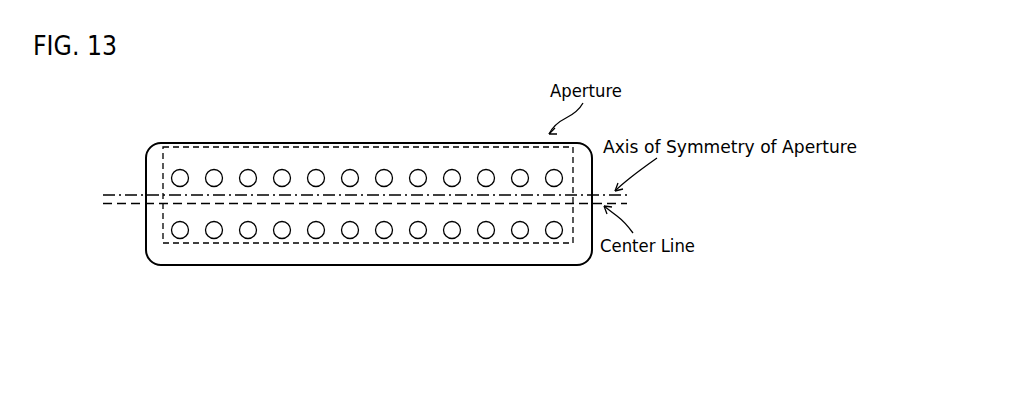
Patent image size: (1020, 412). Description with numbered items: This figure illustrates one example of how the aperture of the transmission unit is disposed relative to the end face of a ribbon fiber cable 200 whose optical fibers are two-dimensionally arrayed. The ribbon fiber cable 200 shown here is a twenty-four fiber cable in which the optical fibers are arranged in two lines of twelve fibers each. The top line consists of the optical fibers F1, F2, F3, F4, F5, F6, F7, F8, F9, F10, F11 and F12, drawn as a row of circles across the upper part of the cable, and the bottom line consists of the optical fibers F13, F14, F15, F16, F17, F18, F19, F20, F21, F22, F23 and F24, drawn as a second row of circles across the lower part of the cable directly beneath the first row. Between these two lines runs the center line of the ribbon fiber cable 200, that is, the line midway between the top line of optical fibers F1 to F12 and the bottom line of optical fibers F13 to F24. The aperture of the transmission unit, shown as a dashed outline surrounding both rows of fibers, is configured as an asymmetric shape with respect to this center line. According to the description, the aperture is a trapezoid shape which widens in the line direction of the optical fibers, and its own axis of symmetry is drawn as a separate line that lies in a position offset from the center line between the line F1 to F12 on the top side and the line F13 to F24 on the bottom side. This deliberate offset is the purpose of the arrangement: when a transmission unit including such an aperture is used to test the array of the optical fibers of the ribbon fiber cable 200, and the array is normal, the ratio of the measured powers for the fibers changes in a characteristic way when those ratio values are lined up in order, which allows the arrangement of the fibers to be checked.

The ribbon fiber cable 200 is at (387, 230).
The optical fiber F1 is at (180, 171).
The optical fiber F2 is at (214, 171).
The optical fiber F3 is at (248, 171).
The optical fiber F4 is at (282, 171).
The optical fiber F5 is at (316, 171).
The optical fiber F6 is at (350, 171).
The optical fiber F7 is at (384, 171).
The optical fiber F8 is at (418, 171).
The optical fiber F9 is at (452, 171).
The optical fiber F10 is at (486, 171).
The optical fiber F11 is at (520, 171).
The optical fiber F12 is at (554, 171).
The optical fiber F13 is at (180, 239).
The optical fiber F14 is at (214, 239).
The optical fiber F15 is at (248, 239).
The optical fiber F16 is at (282, 239).
The optical fiber F17 is at (316, 239).
The optical fiber F18 is at (350, 239).
The optical fiber F19 is at (384, 239).
The optical fiber F20 is at (418, 239).
The optical fiber F21 is at (452, 239).
The optical fiber F22 is at (486, 239).
The optical fiber F23 is at (520, 239).
The optical fiber F24 is at (554, 239).